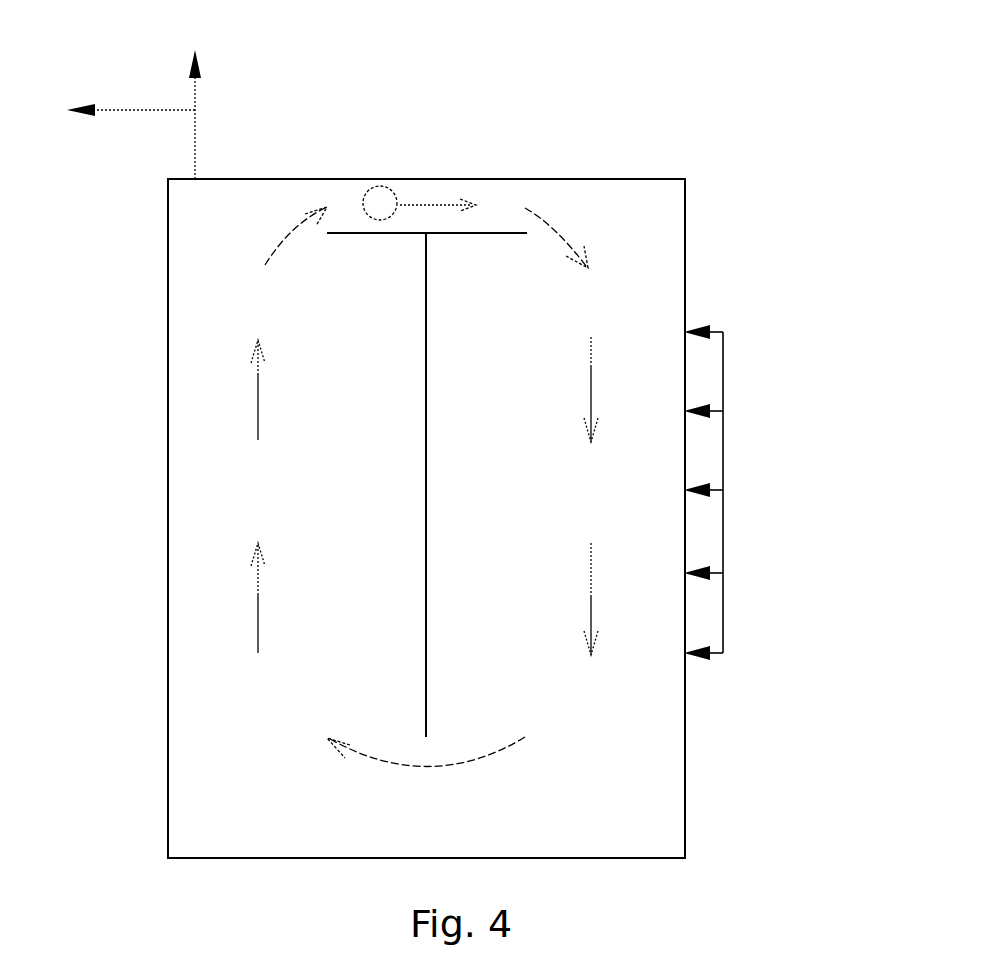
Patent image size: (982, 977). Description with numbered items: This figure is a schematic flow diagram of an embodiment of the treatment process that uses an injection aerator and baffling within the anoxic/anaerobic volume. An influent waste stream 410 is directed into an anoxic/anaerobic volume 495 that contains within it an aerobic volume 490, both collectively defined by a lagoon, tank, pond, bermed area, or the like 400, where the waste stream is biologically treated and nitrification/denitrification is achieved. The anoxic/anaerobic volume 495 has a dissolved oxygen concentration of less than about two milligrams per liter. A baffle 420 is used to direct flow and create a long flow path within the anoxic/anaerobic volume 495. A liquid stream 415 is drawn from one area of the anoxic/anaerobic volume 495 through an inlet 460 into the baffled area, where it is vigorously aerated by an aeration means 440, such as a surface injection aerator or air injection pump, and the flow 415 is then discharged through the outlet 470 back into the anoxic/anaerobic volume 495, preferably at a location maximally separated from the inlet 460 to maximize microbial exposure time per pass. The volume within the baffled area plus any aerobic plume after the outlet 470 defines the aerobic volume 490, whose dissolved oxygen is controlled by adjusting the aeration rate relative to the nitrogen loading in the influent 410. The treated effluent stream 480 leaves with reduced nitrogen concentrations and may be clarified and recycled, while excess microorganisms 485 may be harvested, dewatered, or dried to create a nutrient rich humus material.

The lagoon, tank, pond, bermed area, or the like 400 is at (690, 212).
The influent waste stream 410 is at (723, 490).
The liquid stream 415 is at (284, 496).
The baffle 420 is at (430, 485).
The aeration means 440 is at (380, 186).
The inlet 460 is at (270, 236).
The outlet 470 is at (585, 238).
The treated effluent stream 480 is at (204, 102).
The excess microorganisms 485 is at (131, 88).
The aerobic volume 490 is at (488, 200).
The anoxic/anaerobic volume 495 is at (426, 783).